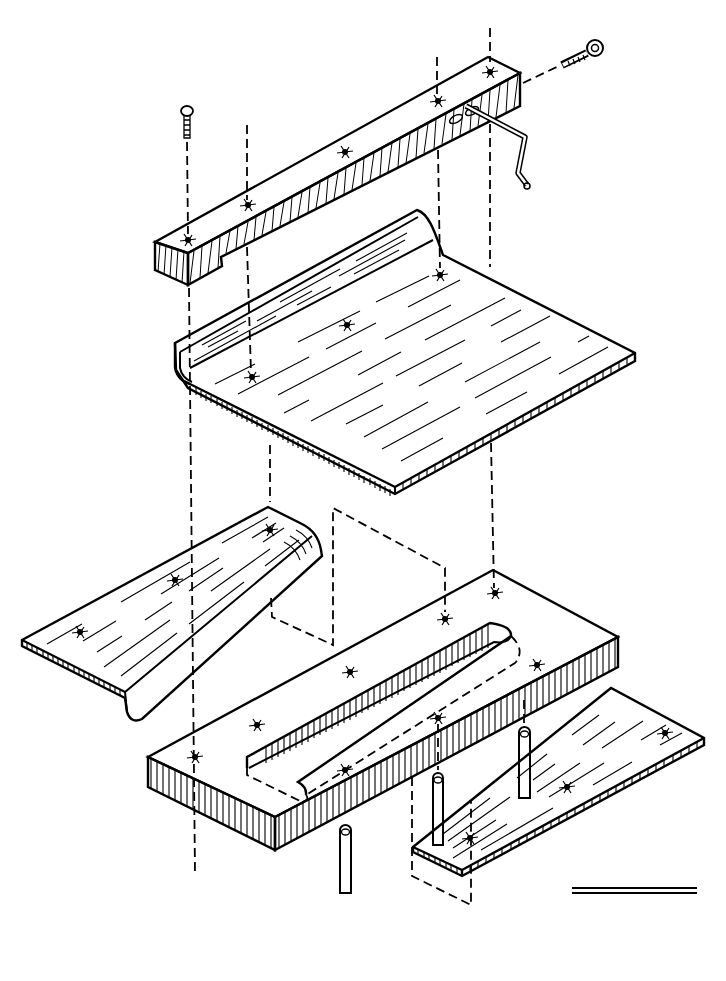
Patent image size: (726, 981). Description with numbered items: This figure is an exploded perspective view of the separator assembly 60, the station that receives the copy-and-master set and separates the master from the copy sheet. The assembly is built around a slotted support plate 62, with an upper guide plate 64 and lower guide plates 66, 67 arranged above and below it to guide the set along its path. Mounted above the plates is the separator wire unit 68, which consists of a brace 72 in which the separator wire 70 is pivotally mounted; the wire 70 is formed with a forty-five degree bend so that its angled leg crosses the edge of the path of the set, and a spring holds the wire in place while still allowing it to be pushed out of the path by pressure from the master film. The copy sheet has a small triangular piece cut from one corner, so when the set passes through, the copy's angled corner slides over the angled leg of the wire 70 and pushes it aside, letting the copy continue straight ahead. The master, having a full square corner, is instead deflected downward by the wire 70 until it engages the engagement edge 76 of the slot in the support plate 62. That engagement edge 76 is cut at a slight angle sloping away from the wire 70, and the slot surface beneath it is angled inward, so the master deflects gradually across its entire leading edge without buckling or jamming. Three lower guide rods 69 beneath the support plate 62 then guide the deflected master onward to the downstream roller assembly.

The separator assembly 60 is at (563, 418).
The slotted support plate 62 is at (620, 645).
The upper guide plate 64 is at (537, 297).
The lower guide plate 66 is at (93, 598).
The lower guide plate 67 is at (648, 705).
The separator wire unit 68 is at (371, 117).
The lower guide rods 69 is at (340, 873).
The separator wire 70 is at (530, 166).
The brace 72 is at (292, 167).
The engagement edge 76 is at (387, 720).